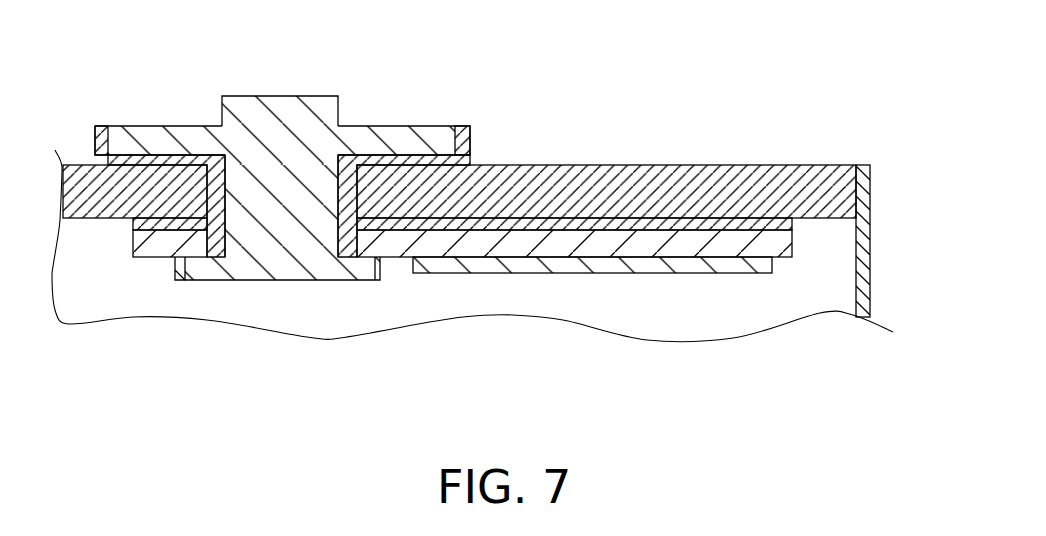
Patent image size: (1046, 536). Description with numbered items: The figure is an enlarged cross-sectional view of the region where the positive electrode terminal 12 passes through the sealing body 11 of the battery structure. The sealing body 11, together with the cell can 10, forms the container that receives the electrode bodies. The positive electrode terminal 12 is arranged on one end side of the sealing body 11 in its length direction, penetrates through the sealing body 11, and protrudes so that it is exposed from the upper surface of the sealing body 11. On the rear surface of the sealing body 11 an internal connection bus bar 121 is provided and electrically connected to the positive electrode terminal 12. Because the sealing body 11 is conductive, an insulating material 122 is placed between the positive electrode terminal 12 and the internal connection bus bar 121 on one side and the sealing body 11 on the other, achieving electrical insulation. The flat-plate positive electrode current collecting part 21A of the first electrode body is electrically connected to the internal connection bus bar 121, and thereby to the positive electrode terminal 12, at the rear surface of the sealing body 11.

The cell can 10 is at (870, 272).
The sealing body 11 is at (798, 165).
The positive electrode terminal 12 is at (443, 144).
The internal connection bus bar 121 is at (655, 240).
The insulating material 122 is at (470, 143).
The positive electrode current collecting part 21A is at (692, 273).